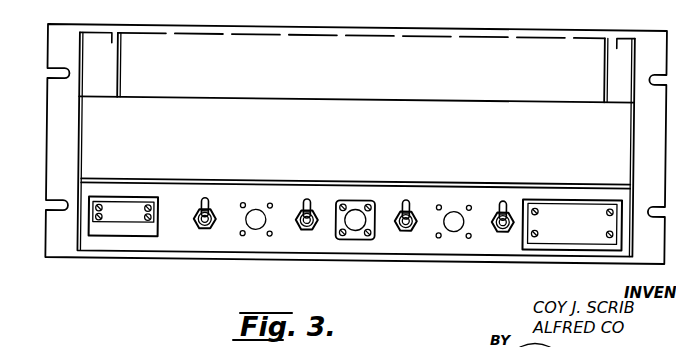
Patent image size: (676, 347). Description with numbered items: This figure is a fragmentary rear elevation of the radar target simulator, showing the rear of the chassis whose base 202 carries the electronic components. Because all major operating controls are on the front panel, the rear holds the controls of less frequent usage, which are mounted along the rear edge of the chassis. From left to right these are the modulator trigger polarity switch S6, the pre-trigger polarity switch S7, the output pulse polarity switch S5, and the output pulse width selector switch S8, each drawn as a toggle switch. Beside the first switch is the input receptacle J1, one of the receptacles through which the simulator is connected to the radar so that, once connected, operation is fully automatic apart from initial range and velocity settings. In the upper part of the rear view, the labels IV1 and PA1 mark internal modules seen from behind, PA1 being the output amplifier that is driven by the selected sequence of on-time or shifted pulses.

The base 202 is at (102, 257).
The inverter module IV1 is at (122, 69).
The output amplifier PA1 is at (606, 64).
The modulator trigger polarity switch S6 is at (201, 226).
The input receptacle J1 is at (254, 224).
The pre-trigger polarity switch S7 is at (304, 227).
The output pulse polarity switch S5 is at (403, 228).
The output pulse width selector switch S8 is at (500, 228).